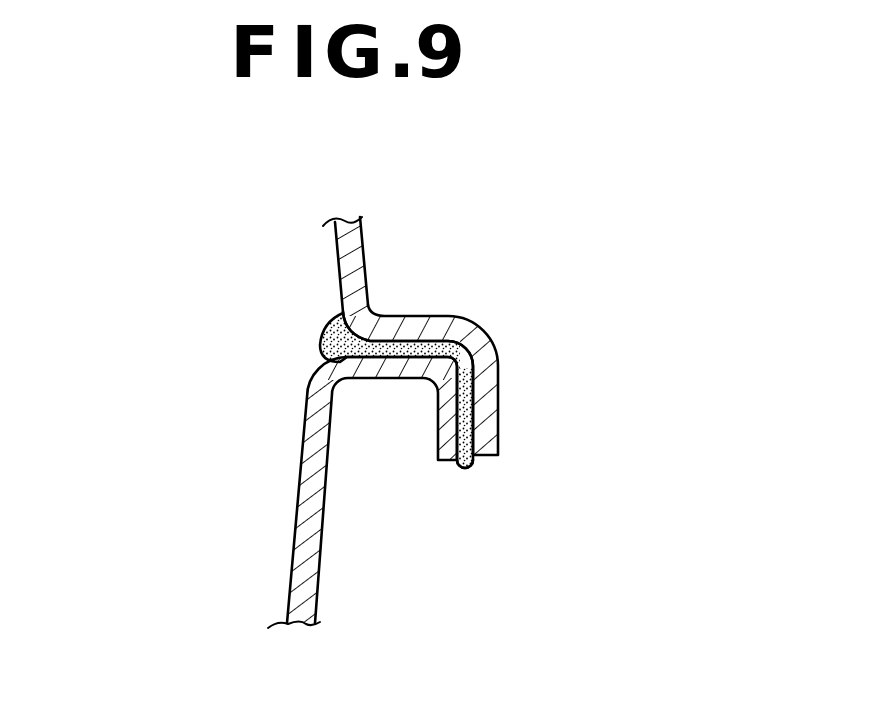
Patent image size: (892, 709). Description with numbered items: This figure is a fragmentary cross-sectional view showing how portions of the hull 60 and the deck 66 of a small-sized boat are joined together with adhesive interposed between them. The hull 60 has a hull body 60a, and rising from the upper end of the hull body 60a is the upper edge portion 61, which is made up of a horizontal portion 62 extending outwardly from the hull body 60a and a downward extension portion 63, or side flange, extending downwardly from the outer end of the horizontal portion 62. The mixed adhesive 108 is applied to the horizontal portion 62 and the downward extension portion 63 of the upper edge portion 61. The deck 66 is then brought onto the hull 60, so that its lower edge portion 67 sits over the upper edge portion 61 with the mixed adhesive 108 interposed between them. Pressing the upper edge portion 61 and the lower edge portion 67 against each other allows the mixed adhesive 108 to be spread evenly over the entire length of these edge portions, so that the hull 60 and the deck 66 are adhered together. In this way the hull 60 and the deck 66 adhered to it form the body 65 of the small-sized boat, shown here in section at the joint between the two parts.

The hull 60 is at (291, 561).
The hull body 60a is at (277, 590).
The upper edge portion 61 is at (130, 298).
The horizontal portion 62 is at (322, 337).
The downward extension portion 63 is at (443, 420).
The body 65 is at (592, 448).
The deck 66 is at (363, 240).
The lower edge portion 67 is at (462, 366).
The mixed adhesive 108 is at (464, 468).